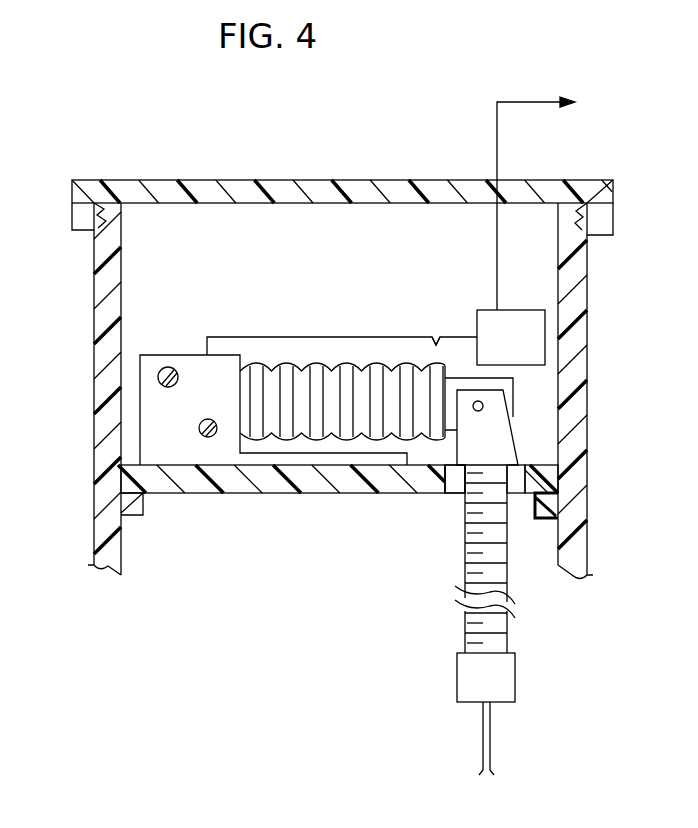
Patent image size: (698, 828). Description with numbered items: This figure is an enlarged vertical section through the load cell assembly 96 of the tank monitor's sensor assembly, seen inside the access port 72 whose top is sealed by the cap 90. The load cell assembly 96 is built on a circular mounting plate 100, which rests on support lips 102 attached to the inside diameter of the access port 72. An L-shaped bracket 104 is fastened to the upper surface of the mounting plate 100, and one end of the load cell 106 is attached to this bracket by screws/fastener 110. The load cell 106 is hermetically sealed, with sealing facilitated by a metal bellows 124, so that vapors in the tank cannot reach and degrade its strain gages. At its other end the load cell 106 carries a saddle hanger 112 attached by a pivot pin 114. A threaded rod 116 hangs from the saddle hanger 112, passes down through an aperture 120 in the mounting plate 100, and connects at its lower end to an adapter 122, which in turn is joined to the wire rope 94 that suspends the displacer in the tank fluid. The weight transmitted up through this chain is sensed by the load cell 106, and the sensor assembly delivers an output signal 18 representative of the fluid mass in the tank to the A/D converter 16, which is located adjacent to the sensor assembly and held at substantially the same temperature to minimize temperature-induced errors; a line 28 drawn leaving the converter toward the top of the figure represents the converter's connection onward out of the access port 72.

The A/D converter 16 is at (511, 337).
The output signal 18 is at (440, 340).
The output line 28 is at (537, 100).
The access port 72 is at (258, 172).
The cap 90 is at (362, 180).
The wire rope 94 is at (480, 743).
The load cell assembly 96 is at (302, 325).
The mounting plate 100 is at (241, 488).
The support lips 102 is at (132, 500).
The L-shaped bracket 104 is at (273, 410).
The load cell 106 is at (373, 355).
The screws/fastener 110 is at (167, 368).
The saddle hanger 112 is at (503, 444).
The pivot pin 114 is at (484, 405).
The threaded rod 116 is at (475, 553).
The aperture 120 is at (455, 495).
The adapter 122 is at (516, 686).
The metal bellows 124 is at (320, 437).